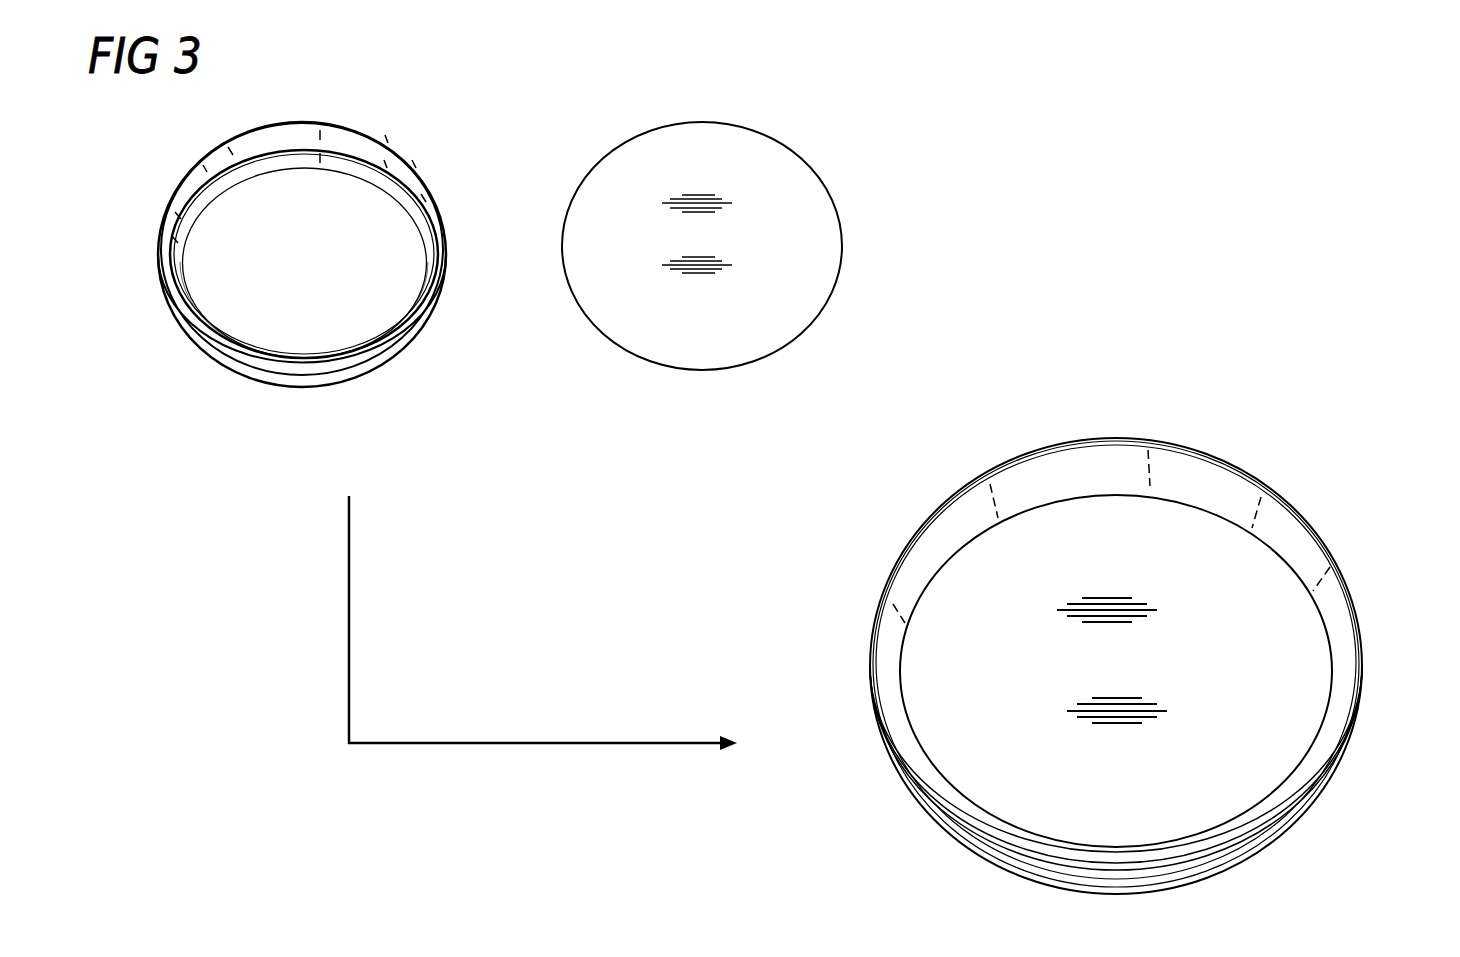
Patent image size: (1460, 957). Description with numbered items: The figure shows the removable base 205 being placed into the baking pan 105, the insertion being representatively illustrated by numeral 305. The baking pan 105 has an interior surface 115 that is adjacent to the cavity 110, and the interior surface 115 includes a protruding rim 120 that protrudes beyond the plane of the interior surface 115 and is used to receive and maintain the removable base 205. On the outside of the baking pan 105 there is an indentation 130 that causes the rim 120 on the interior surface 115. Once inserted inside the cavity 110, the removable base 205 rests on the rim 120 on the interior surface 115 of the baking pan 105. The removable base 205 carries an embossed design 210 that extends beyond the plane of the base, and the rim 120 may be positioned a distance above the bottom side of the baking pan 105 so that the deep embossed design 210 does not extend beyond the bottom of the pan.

The baking pan 105 is at (184, 173).
The cavity 110 is at (305, 306).
The interior surface 115 is at (200, 167).
The protruding rim 120 is at (211, 177).
The indentation 130 is at (1210, 858).
The removable base 205 is at (773, 133).
The embossed design 210 is at (1093, 817).
The insertion of the removable base 305 is at (316, 240).